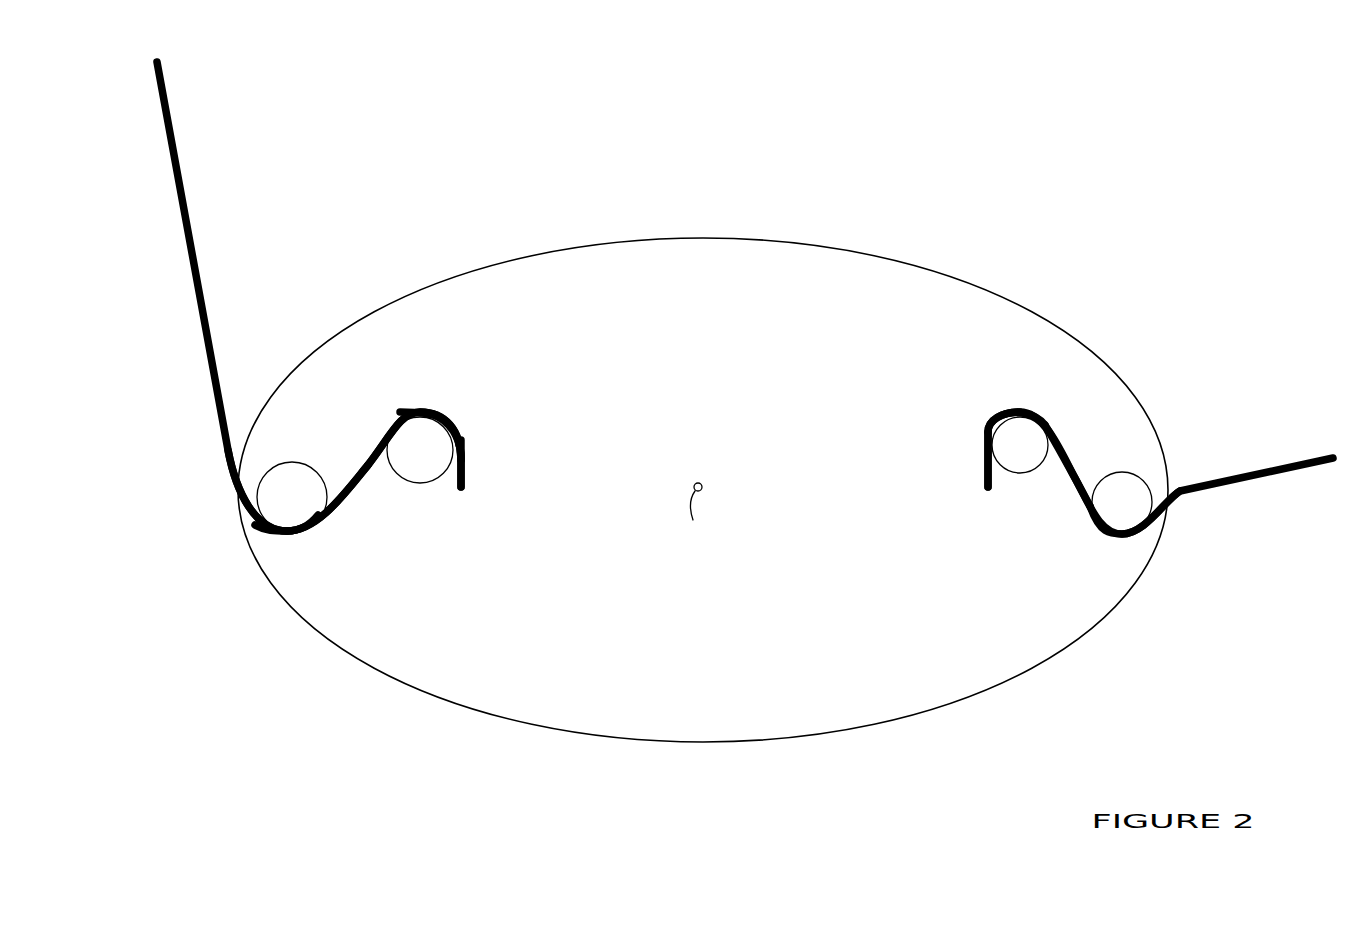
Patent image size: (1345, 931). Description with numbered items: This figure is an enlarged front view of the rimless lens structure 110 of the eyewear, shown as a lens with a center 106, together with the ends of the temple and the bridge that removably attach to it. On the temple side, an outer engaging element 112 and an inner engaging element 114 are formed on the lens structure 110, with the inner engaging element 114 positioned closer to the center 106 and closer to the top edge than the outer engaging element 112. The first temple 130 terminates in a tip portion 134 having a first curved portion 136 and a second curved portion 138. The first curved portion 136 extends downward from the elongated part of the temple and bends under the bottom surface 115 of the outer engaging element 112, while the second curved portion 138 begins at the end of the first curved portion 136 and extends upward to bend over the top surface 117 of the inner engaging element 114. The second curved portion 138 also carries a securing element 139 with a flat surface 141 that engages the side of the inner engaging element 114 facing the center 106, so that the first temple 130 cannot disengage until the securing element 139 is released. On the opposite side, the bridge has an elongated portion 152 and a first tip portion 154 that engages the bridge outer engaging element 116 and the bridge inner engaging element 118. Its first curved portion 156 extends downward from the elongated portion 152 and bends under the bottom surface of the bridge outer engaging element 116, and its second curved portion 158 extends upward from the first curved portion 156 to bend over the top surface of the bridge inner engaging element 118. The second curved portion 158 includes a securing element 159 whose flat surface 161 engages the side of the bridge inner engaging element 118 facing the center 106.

The center 106 is at (705, 516).
The first lens structure 110 is at (717, 728).
The outer engaging element 112 is at (318, 490).
The inner engaging element 114 is at (400, 462).
The bottom surface 115 is at (281, 544).
The bridge outer engaging element 116 is at (1123, 493).
The top surface 117 is at (414, 405).
The bridge inner engaging element 118 is at (1012, 458).
The first temple 130 is at (197, 175).
The tip portion 134 is at (253, 522).
The first curved portion 136 is at (290, 537).
The second curved portion 138 is at (423, 410).
The securing element 139 is at (467, 433).
The flat surface 141 is at (452, 458).
The elongated portion 152 is at (1282, 470).
The first tip portion 154 is at (1065, 470).
The first curved portion 156 is at (1112, 537).
The second curved portion 158 is at (1028, 412).
The securing element 159 is at (985, 442).
The flat surface 161 is at (1003, 444).